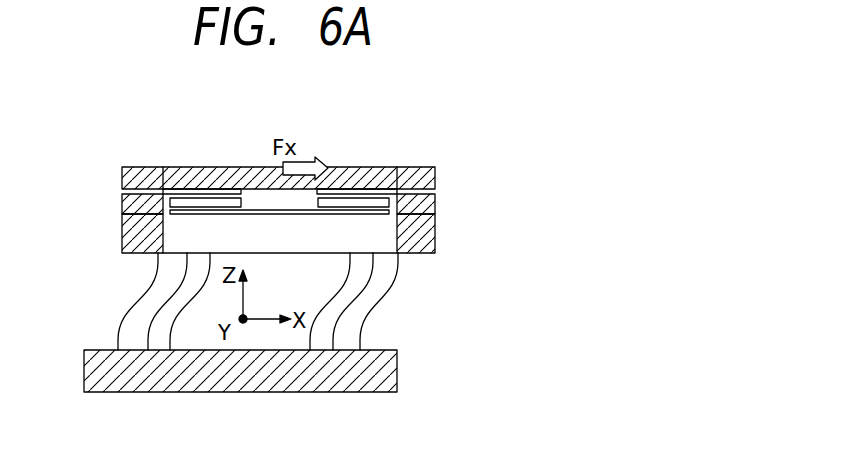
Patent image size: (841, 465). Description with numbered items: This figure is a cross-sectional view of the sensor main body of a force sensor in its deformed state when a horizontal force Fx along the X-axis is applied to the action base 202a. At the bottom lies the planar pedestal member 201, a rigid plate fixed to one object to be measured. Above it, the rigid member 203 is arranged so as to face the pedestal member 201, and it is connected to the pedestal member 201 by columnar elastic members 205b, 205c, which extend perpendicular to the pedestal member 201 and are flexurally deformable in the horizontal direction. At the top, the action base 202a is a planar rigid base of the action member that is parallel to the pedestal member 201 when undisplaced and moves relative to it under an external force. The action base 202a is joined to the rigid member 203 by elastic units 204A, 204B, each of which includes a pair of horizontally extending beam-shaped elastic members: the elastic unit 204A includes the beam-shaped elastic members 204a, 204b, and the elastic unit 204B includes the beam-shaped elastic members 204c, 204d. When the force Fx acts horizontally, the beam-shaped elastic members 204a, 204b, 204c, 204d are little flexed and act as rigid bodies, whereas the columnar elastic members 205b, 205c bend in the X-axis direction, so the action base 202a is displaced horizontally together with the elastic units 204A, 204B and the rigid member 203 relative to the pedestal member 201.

The pedestal member 201 is at (397, 372).
The action base 202a is at (238, 177).
The rigid member 203 is at (428, 240).
The elastic unit 204A is at (420, 145).
The beam-shaped elastic member 204a is at (345, 194).
The beam-shaped elastic member 204b is at (367, 207).
The elastic unit 204B is at (135, 143).
The beam-shaped elastic member 204c is at (208, 194).
The beam-shaped elastic member 204d is at (190, 206).
The columnar elastic member 205b is at (379, 307).
The columnar elastic member 205c is at (138, 303).